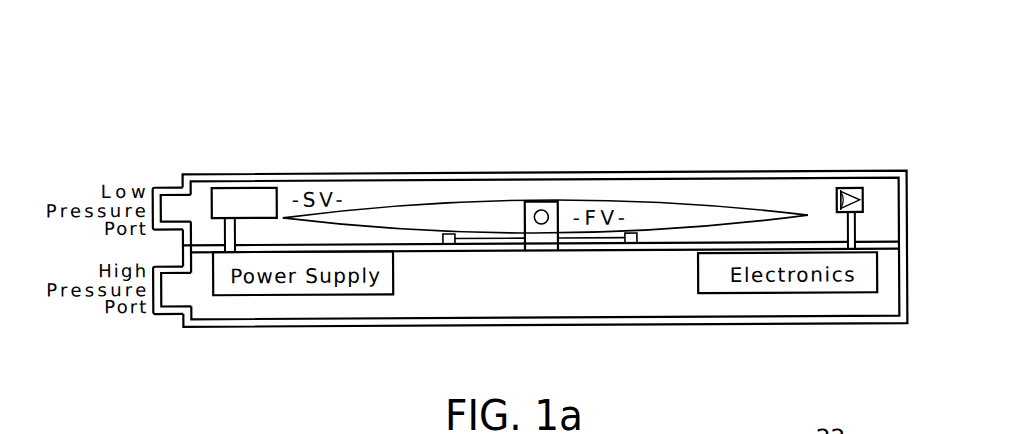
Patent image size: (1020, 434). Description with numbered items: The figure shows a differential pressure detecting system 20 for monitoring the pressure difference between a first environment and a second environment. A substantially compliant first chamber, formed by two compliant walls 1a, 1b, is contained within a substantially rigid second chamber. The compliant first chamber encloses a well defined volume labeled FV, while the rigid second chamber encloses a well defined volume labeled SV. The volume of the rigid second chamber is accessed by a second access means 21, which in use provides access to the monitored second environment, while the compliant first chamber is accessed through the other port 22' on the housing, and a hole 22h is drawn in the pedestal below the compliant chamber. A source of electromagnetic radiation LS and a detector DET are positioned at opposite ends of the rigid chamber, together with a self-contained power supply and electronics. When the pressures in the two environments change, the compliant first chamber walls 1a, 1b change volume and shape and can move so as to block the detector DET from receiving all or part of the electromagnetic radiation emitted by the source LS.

The differential pressure detecting system 20 is at (806, 84).
The second access means 21 is at (168, 178).
The high pressure port 22' is at (202, 323).
The source of electromagnetic radiation LS is at (243, 187).
The detector DET is at (851, 190).
The substantially compliant first chamber wall 1a is at (614, 198).
The substantially compliant first chamber wall 1b is at (691, 222).
The hole in pedestal 22h is at (544, 228).